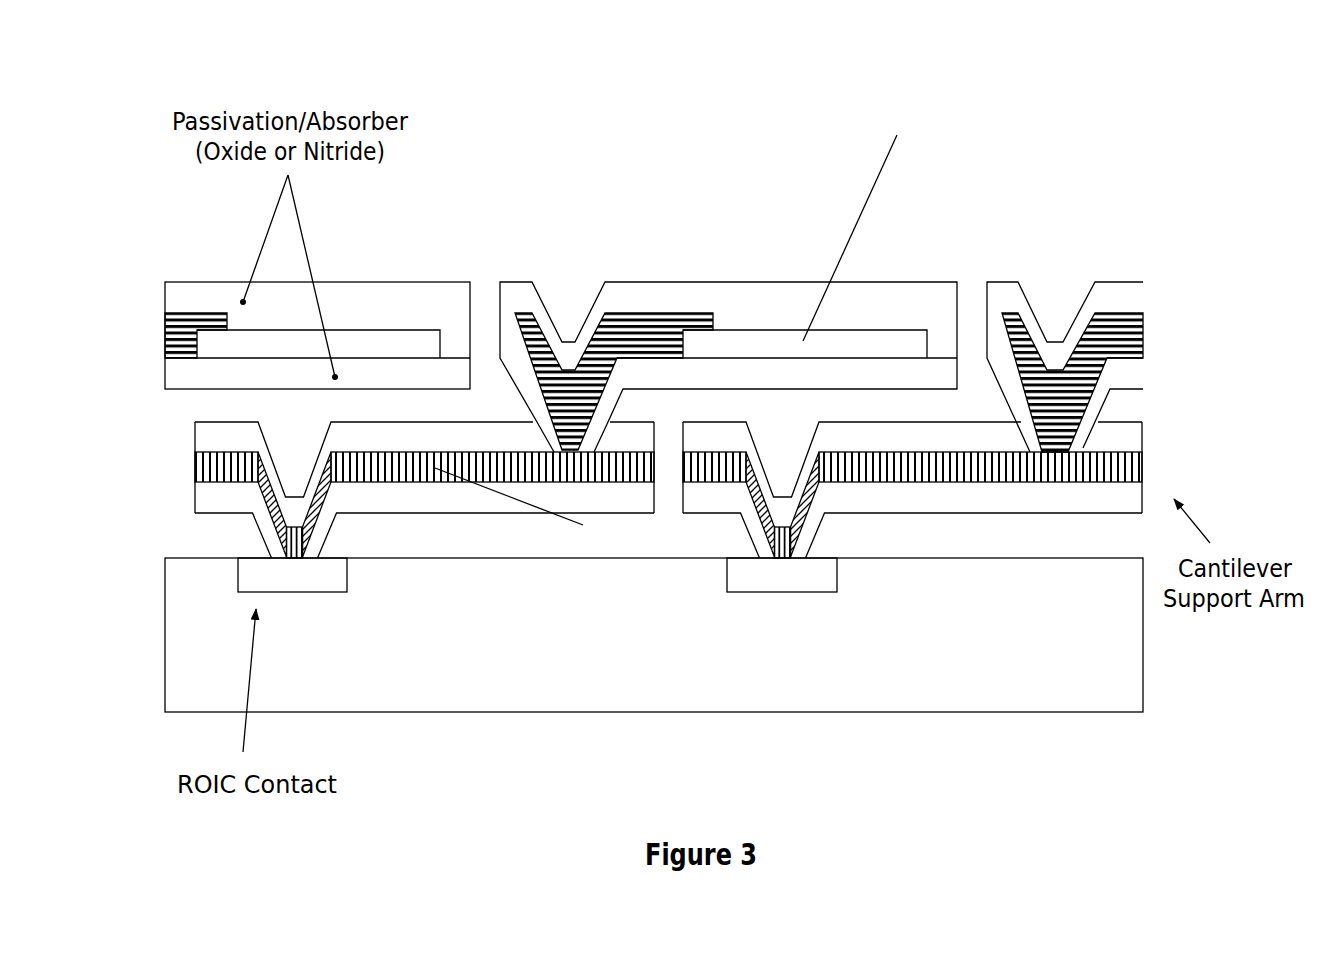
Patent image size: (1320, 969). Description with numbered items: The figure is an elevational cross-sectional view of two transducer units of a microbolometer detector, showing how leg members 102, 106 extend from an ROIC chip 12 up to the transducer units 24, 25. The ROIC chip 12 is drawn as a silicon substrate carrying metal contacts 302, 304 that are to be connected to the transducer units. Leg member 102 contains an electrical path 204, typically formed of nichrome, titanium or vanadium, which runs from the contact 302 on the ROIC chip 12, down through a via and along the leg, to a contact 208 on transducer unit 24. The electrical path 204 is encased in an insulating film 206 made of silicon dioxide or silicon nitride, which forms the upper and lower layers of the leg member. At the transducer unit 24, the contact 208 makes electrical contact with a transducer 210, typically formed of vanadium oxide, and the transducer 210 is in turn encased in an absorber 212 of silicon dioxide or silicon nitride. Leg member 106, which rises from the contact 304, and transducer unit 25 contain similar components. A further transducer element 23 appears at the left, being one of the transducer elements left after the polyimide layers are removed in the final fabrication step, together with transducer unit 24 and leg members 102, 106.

The ROIC chip 12 is at (1114, 699).
The transducer element 23 is at (395, 264).
The transducer unit 24 is at (769, 275).
The transducer unit 25 is at (1133, 264).
The leg member 102 is at (390, 490).
The leg member 106 is at (1163, 433).
The electrical path 204 is at (435, 468).
The insulating film 206 is at (365, 437).
The contact 208 is at (633, 330).
The transducer 210 is at (803, 341).
The absorber 212 is at (710, 294).
The contact 302 is at (332, 580).
The contact 304 is at (822, 578).